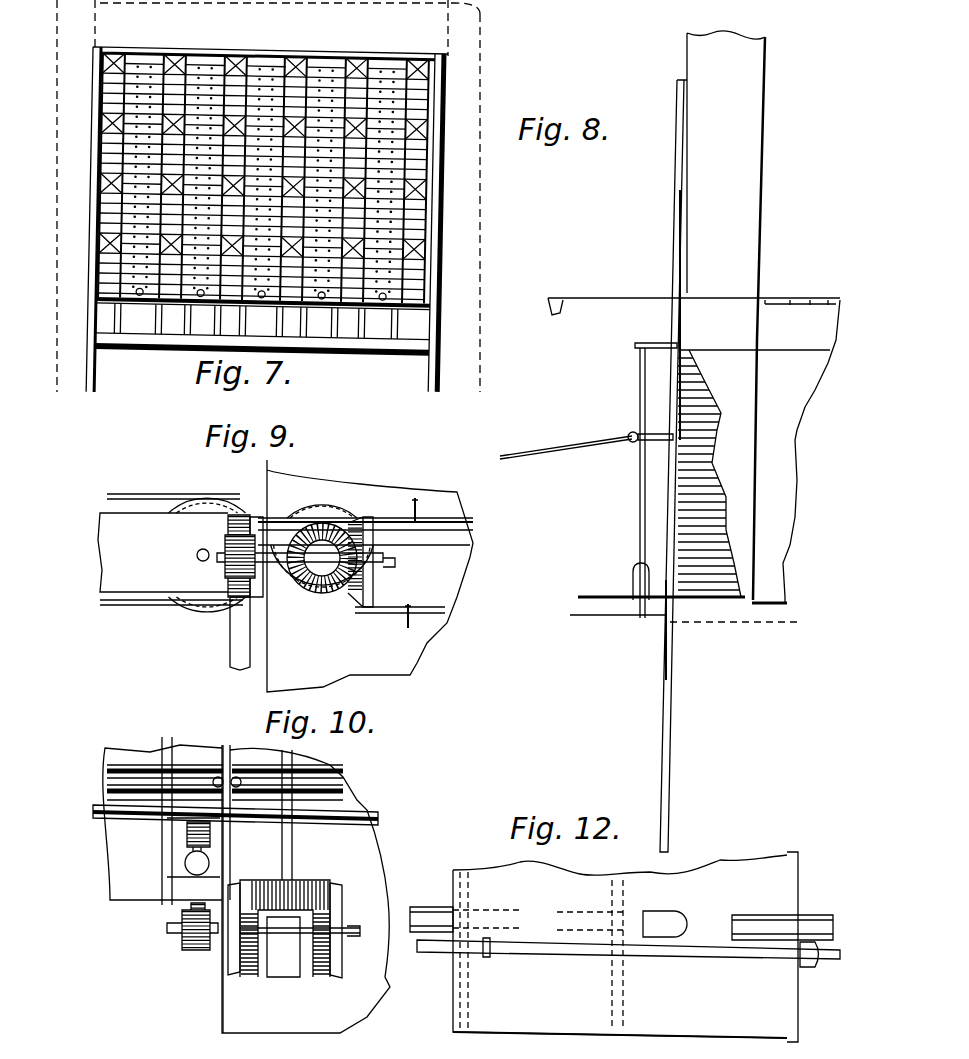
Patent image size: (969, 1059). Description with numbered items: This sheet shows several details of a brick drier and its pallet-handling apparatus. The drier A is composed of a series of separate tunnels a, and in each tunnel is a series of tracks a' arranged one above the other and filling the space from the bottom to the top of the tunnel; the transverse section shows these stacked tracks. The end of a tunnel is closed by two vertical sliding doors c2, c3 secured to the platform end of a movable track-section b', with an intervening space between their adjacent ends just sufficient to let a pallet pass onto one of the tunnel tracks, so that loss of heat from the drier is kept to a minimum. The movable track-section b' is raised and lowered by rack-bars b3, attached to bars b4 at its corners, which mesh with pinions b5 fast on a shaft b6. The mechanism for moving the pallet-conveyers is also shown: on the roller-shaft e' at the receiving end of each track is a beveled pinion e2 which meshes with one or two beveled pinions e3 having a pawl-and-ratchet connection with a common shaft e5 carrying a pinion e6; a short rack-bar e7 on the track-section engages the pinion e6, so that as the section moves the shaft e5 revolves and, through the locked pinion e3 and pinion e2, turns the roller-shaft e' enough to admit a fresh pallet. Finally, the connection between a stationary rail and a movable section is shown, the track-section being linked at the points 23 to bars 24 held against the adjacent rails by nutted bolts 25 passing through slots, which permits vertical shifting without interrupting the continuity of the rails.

In FIG. 7, the drier A is at (267, 214).
In FIG. 8, the drier A is at (694, 326).
In FIG. 9, the drier A is at (412, 563).
In FIG. 10, the drier A is at (384, 1022).
In FIG. 12, the drier A is at (621, 947).
In FIG. 7, the tunnel a is at (263, 163).
In FIG. 8, the tunnel a is at (709, 498).
In FIG. 9, the tunnel a is at (285, 576).
In FIG. 10, the tunnel a is at (250, 885).
In FIG. 7, the track a' is at (263, 178).
In FIG. 9, the track a' is at (376, 528).
In FIG. 10, the track a' is at (249, 814).
In FIG. 8, the movable track-section b' is at (586, 454).
In FIG. 10, the rack-bar b3 is at (190, 847).
In FIG. 10, the bar b4 is at (210, 860).
In FIG. 10, the pinion b5 is at (212, 828).
In FIG. 10, the shaft b6 is at (105, 850).
In FIG. 8, the vertical sliding door c2 is at (676, 246).
In FIG. 8, the vertical sliding door c3 is at (662, 662).
In FIG. 10, the roller-shaft e' is at (269, 889).
In FIG. 9, the beveled pinion e2 is at (322, 594).
In FIG. 10, the beveled pinion e2 is at (322, 880).
In FIG. 9, the beveled pinion e3 is at (363, 592).
In FIG. 10, the beveled pinion e3 is at (322, 970).
In FIG. 9, the common shaft e5 is at (293, 565).
In FIG. 10, the common shaft e5 is at (167, 930).
In FIG. 9, the pinion e6 is at (223, 567).
In FIG. 10, the pinion e6 is at (182, 947).
In FIG. 9, the short rack-bar e7 is at (238, 515).
In FIG. 10, the short rack-bar e7 is at (190, 908).
In FIG. 12, the linking point 23 is at (810, 967).
In FIG. 12, the bar 24 is at (628, 944).
In FIG. 12, the nutted bolt 25 is at (487, 958).